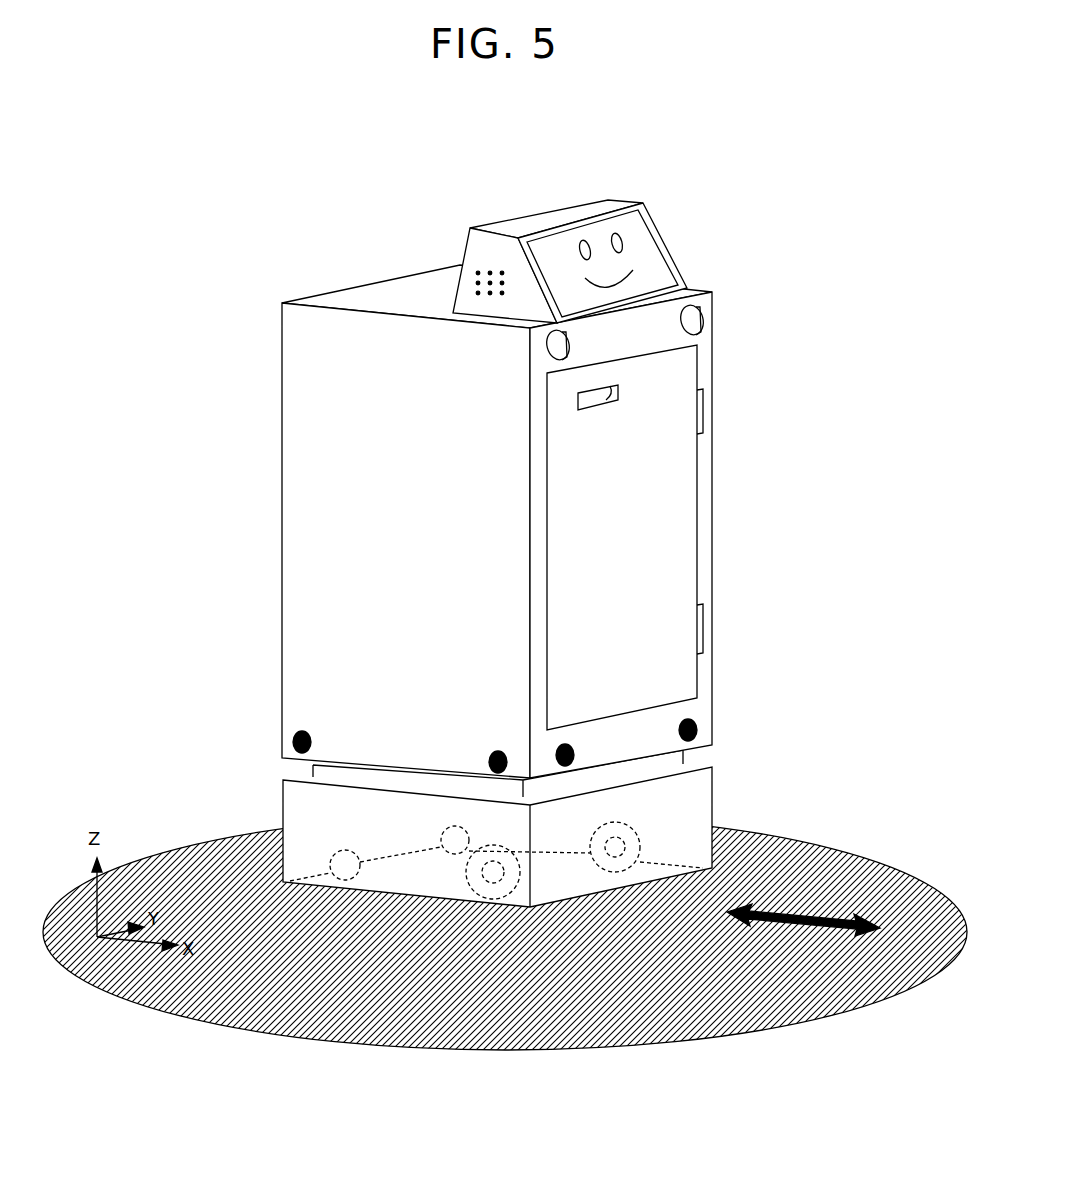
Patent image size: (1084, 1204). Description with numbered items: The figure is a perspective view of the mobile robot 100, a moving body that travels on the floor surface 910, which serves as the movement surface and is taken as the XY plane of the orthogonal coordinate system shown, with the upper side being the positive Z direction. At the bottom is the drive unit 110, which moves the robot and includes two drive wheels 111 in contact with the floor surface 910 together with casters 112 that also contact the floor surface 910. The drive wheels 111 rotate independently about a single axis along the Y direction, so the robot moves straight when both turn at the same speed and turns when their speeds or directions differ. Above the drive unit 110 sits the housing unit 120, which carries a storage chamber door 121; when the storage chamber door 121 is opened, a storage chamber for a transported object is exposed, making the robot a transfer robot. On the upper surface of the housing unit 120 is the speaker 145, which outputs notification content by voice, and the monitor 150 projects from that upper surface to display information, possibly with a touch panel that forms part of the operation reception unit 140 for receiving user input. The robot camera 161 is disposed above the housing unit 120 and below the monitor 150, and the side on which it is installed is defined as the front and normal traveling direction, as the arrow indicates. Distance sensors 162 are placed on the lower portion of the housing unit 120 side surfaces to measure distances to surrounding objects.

The mobile robot 100 is at (559, 536).
The drive unit 110 is at (578, 776).
The drive wheels 111 is at (650, 823).
The casters 112 is at (335, 860).
The housing unit 120 is at (552, 521).
The storage chamber door 121 is at (662, 490).
The operation reception unit 140 is at (587, 244).
The speaker 145 is at (487, 267).
The monitor 150 is at (663, 275).
The robot camera 161 is at (697, 318).
The distance sensor 162 is at (300, 742).
The floor surface 910 is at (813, 862).